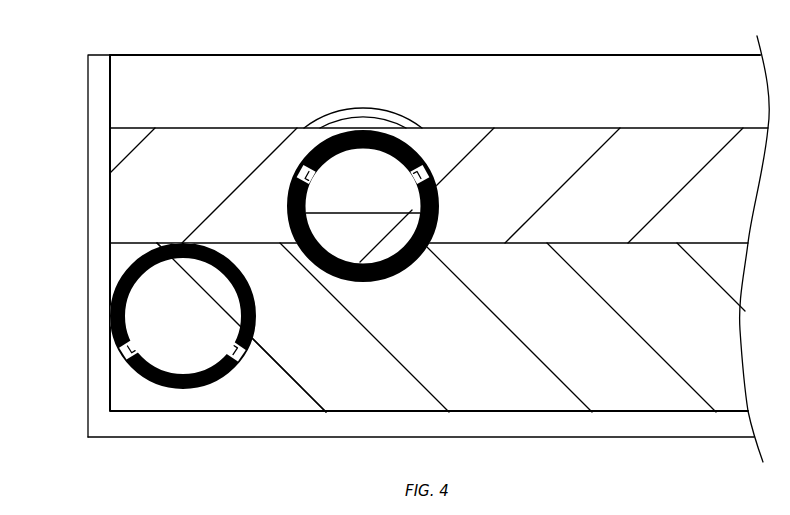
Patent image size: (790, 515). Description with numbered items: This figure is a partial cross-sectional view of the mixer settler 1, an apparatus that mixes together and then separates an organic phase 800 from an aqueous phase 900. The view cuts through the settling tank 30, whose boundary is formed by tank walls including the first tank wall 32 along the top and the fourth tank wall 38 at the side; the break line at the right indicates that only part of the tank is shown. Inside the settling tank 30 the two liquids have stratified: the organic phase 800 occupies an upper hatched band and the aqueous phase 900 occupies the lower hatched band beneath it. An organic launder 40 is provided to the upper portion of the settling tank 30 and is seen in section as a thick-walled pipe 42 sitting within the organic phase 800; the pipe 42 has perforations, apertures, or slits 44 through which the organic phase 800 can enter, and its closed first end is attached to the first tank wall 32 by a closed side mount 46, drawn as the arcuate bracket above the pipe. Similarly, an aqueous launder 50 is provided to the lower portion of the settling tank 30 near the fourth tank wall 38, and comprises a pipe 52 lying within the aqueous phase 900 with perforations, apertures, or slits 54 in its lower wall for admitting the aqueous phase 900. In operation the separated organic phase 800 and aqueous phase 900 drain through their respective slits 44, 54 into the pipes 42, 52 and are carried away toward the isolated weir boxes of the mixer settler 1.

The mixer settler 1 is at (78, 56).
The settling tank 30 is at (596, 88).
The first tank wall 32 is at (470, 55).
The fourth tank wall 38 is at (96, 136).
The organic launder 40 is at (347, 183).
The pipe 42 is at (439, 205).
The perforations, apertures, or slits 44 is at (310, 171).
The closed side mount 46 is at (383, 113).
The aqueous launder 50 is at (187, 361).
The pipe 52 is at (256, 302).
The perforations, apertures, or slits 54 is at (247, 354).
The organic phase 800 is at (614, 194).
The aqueous phase 900 is at (572, 330).